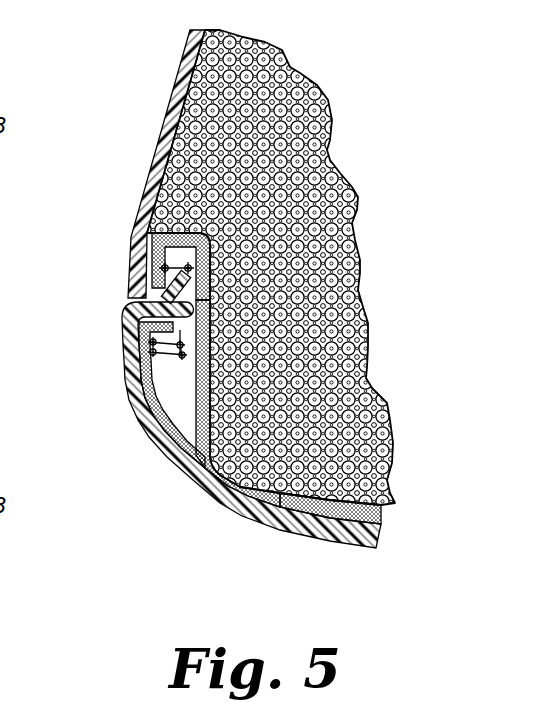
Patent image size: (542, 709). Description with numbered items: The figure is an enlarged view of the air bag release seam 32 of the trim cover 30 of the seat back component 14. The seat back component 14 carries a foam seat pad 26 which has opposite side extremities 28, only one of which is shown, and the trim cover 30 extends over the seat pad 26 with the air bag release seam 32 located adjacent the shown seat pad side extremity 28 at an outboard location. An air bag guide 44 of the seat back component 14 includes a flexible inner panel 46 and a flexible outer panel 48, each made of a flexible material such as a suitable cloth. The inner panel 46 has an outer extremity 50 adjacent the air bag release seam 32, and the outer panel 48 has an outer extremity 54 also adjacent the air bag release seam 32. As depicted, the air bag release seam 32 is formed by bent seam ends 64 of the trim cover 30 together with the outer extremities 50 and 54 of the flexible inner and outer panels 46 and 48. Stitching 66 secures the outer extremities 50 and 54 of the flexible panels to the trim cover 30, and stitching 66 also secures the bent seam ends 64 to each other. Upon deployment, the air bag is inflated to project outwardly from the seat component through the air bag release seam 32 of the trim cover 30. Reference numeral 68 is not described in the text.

The seat back component 14 is at (270, 531).
The foam seat pad 26 is at (198, 133).
The side extremity 28 is at (343, 482).
The trim cover 30 is at (182, 47).
The air bag release seam 32 is at (103, 302).
The air bag guide 44 is at (235, 495).
The inner panel 46 is at (211, 430).
The outer panel 48 is at (188, 468).
The outer extremity 50 is at (196, 284).
The outer extremity 54 is at (147, 348).
The bent seam ends 64 is at (192, 266).
The stitching 66 is at (190, 264).
The gap 68 is at (153, 298).